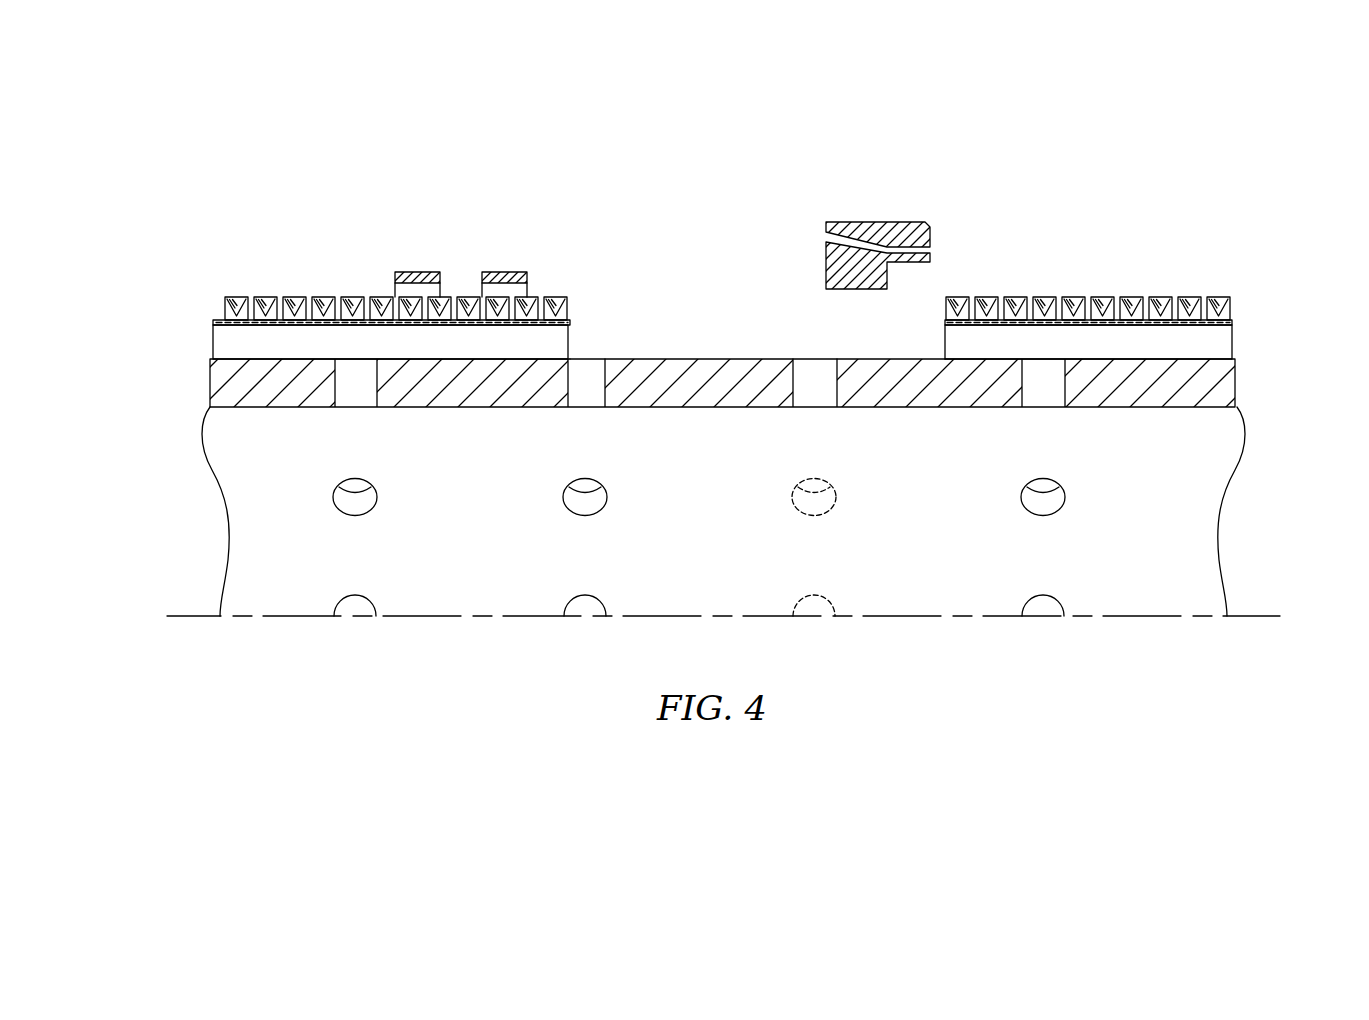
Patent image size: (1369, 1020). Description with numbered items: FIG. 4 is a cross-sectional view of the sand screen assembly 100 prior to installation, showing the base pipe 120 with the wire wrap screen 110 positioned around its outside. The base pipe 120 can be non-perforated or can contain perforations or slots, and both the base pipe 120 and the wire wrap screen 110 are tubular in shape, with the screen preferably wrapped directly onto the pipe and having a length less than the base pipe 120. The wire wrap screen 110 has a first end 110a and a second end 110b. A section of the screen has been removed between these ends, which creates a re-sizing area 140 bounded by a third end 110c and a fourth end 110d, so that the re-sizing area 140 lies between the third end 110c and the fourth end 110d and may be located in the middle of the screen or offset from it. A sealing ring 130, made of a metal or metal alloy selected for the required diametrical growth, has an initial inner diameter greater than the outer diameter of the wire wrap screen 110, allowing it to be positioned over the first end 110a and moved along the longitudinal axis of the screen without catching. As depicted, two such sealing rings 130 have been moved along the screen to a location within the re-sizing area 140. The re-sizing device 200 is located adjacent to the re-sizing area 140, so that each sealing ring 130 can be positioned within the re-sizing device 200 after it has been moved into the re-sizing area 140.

The sand screen assembly 100 is at (142, 168).
The wire wrap screen 110 is at (1152, 297).
The first end 110a is at (225, 307).
The second end 110b is at (1230, 302).
The third end 110c is at (570, 310).
The fourth end 110d is at (947, 312).
The base pipe 120 is at (1175, 407).
The sealing ring 130 is at (498, 272).
The re-sizing area 140 is at (753, 232).
The re-sizing device 200 is at (853, 222).